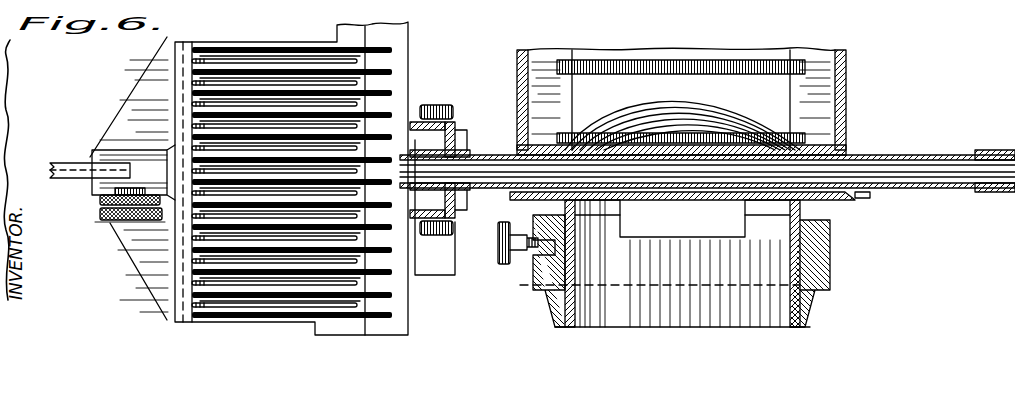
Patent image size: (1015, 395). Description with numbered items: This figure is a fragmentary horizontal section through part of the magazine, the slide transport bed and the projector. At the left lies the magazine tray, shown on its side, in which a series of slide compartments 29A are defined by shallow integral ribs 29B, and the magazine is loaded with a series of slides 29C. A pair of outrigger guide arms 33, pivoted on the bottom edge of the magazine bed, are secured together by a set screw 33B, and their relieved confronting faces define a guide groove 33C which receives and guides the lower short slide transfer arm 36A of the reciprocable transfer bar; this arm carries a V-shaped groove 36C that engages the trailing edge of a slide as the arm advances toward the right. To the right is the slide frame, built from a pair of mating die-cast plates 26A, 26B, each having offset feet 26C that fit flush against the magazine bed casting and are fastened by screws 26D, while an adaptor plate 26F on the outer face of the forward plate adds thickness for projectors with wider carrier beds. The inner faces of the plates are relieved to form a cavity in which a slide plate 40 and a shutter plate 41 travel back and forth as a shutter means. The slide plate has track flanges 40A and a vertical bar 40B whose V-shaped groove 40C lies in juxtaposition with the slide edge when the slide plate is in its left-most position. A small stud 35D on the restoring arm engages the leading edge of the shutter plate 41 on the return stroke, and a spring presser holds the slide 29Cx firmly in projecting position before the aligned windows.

The slide compartments 29A is at (178, 108).
The integral ribs 29B is at (192, 272).
The slides 29C is at (408, 168).
The slide 29Cx is at (415, 278).
The outrigger guide arms 33 is at (128, 112).
The set screw 33B is at (133, 222).
The guide groove 33C is at (148, 172).
The slide transfer arm 36A is at (76, 138).
The V-shaped groove 36C is at (124, 170).
The slide plate 40 is at (573, 168).
The track flanges 40A is at (575, 186).
The vertical bar 40B is at (461, 160).
The V-shaped groove 40C is at (420, 110).
The shutter plate 41 is at (663, 157).
The die-cast plate 26A is at (935, 154).
The forward die-cast plate 26B is at (962, 190).
The offset feet 26C is at (462, 140).
The screws 26D is at (455, 104).
The adaptor plate 26F is at (838, 212).
The stud 35D is at (845, 146).